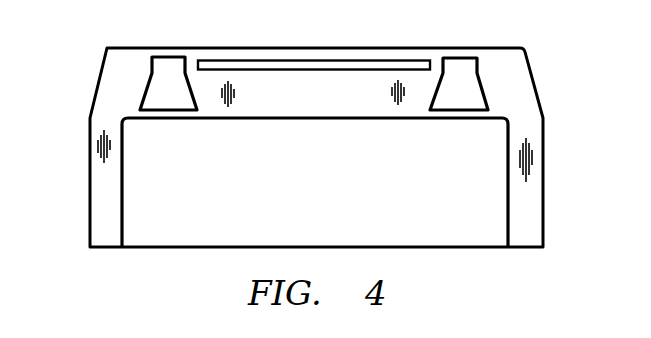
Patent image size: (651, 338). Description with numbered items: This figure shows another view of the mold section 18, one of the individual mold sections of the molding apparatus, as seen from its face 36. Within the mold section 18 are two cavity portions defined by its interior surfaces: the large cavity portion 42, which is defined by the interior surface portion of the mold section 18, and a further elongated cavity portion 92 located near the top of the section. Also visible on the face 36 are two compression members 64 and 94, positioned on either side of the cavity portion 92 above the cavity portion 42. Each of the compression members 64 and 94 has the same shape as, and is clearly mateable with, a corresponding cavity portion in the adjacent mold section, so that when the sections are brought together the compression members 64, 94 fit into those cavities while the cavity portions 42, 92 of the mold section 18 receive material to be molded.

The mold section 18 is at (537, 188).
The face 36 is at (97, 192).
The cavity portion 42 is at (331, 198).
The compression member 64 is at (458, 68).
The cavity portion 92 is at (312, 66).
The compression member 94 is at (168, 70).